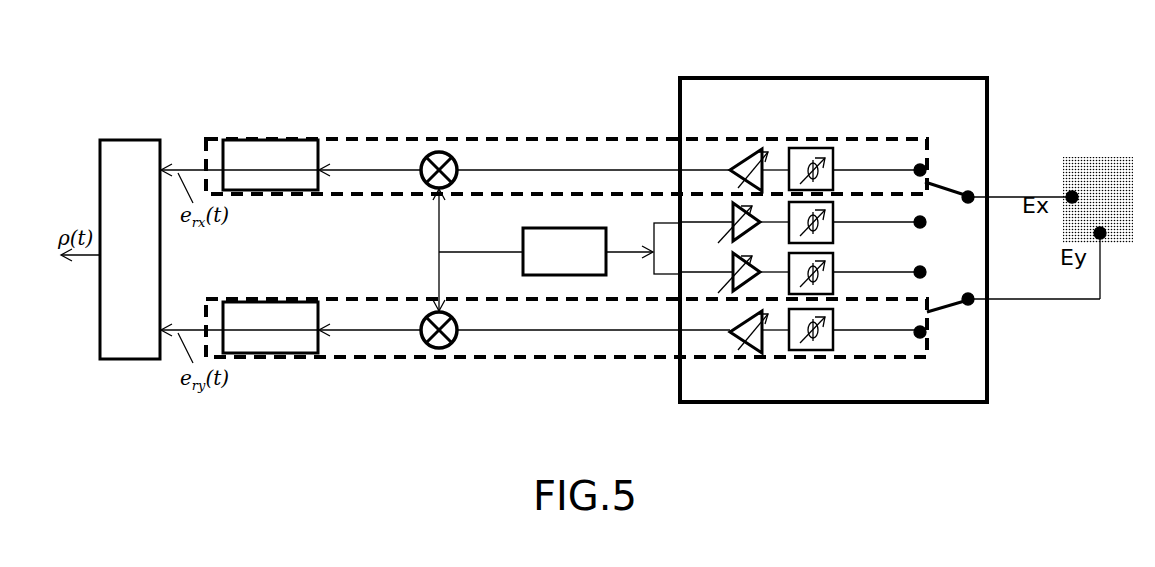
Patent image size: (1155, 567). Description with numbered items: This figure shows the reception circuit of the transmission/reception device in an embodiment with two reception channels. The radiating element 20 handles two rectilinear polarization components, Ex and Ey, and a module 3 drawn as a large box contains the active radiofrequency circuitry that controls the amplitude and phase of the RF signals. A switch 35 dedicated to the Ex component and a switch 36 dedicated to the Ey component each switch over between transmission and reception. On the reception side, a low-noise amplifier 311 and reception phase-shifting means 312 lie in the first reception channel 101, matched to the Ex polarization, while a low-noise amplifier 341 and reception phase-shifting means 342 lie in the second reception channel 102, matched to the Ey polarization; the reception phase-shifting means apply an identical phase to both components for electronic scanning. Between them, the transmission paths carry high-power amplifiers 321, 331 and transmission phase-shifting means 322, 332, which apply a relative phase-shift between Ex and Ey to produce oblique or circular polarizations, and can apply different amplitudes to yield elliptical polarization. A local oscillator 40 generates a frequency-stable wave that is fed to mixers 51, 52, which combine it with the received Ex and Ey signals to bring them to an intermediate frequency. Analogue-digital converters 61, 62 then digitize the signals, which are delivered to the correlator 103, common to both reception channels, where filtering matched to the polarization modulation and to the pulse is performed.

The beam forming unit 3 is at (935, 76).
The radiating element 20 is at (1103, 157).
The switch 35 is at (950, 178).
The switch 36 is at (948, 312).
The local oscillator 40 is at (564, 251).
The mixer 51 is at (441, 150).
The mixer 52 is at (436, 349).
The analogue-digital converter 61 is at (270, 165).
The analogue-digital converter 62 is at (270, 327).
The first reception channel 101 is at (560, 135).
The second reception channel 102 is at (573, 360).
The correlator 103 is at (128, 138).
The low-noise amplifier 311 is at (747, 156).
The reception phase-shifting means 312 is at (805, 145).
The high-power amplifier 321 is at (730, 230).
The transmission phase-shifting means 322 is at (834, 233).
The high-power amplifier 331 is at (727, 284).
The transmission phase-shifting means 332 is at (834, 284).
The low-noise amplifier 341 is at (752, 350).
The reception phase-shifting means 342 is at (815, 351).